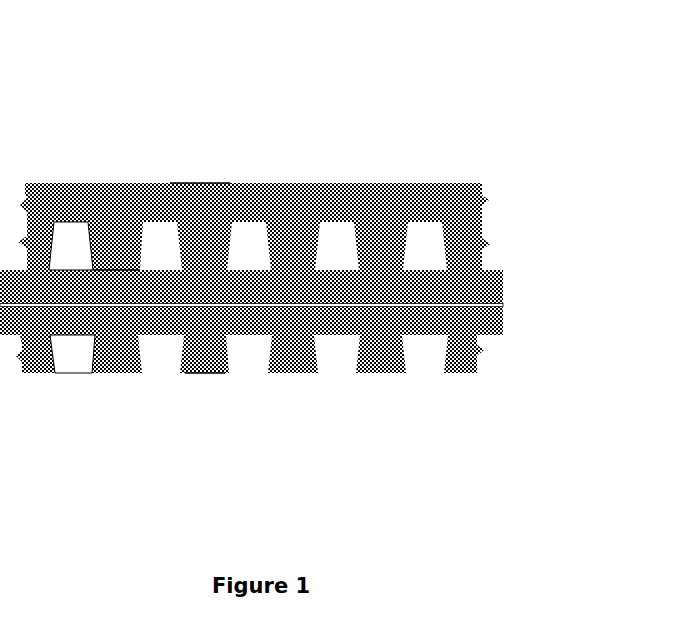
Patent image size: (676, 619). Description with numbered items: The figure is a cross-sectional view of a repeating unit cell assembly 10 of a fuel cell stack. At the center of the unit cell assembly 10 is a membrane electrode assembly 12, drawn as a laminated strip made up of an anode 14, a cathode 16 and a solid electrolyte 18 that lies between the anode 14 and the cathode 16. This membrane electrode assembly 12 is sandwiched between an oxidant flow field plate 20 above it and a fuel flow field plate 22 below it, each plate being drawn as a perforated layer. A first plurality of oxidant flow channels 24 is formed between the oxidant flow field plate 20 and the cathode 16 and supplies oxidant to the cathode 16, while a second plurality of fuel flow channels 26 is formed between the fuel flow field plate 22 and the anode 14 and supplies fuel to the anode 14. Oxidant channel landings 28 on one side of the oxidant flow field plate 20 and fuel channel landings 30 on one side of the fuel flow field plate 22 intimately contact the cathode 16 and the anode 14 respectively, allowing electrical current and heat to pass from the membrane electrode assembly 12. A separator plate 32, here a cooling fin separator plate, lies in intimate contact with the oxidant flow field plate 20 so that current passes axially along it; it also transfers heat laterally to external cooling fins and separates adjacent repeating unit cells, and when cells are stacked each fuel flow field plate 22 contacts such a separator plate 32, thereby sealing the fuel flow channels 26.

The unit cell assembly 10 is at (323, 233).
The membrane electrode assembly 12 is at (323, 315).
The anode 14 is at (503, 330).
The cathode 16 is at (503, 275).
The solid electrolyte 18 is at (503, 308).
The oxidant flow field plate 20 is at (292, 250).
The fuel flow field plate 22 is at (297, 355).
The oxidant flow channels 24 is at (68, 253).
The fuel flow channels 26 is at (68, 352).
The oxidant channel landings 28 is at (117, 270).
The fuel channel landings 30 is at (208, 358).
The separator plate 32 is at (192, 197).